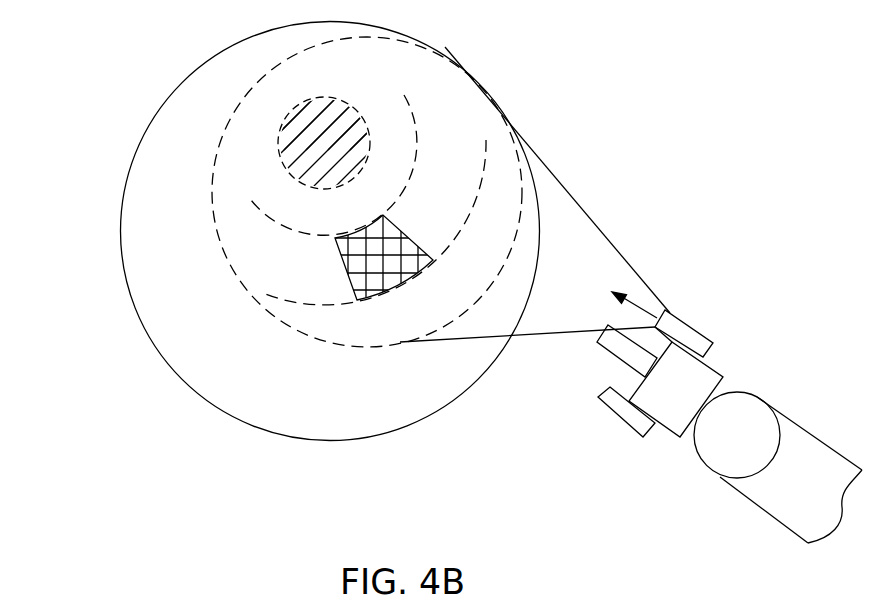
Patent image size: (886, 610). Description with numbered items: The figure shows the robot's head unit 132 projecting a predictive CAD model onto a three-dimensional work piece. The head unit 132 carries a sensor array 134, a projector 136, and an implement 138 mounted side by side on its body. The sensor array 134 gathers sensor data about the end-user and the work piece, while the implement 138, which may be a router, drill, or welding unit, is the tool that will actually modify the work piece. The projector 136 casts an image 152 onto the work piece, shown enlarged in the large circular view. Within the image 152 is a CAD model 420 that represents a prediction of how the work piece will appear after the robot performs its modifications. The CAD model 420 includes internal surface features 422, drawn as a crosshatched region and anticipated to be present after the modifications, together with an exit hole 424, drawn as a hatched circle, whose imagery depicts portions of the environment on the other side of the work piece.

The head unit 132 is at (659, 457).
The sensor array 134 is at (603, 412).
The projector 136 is at (691, 320).
The implement 138 is at (603, 352).
The image 152 is at (283, 319).
The CAD model 420 is at (120, 236).
The internal surface features 422 is at (414, 293).
The exit hole 424 is at (325, 80).